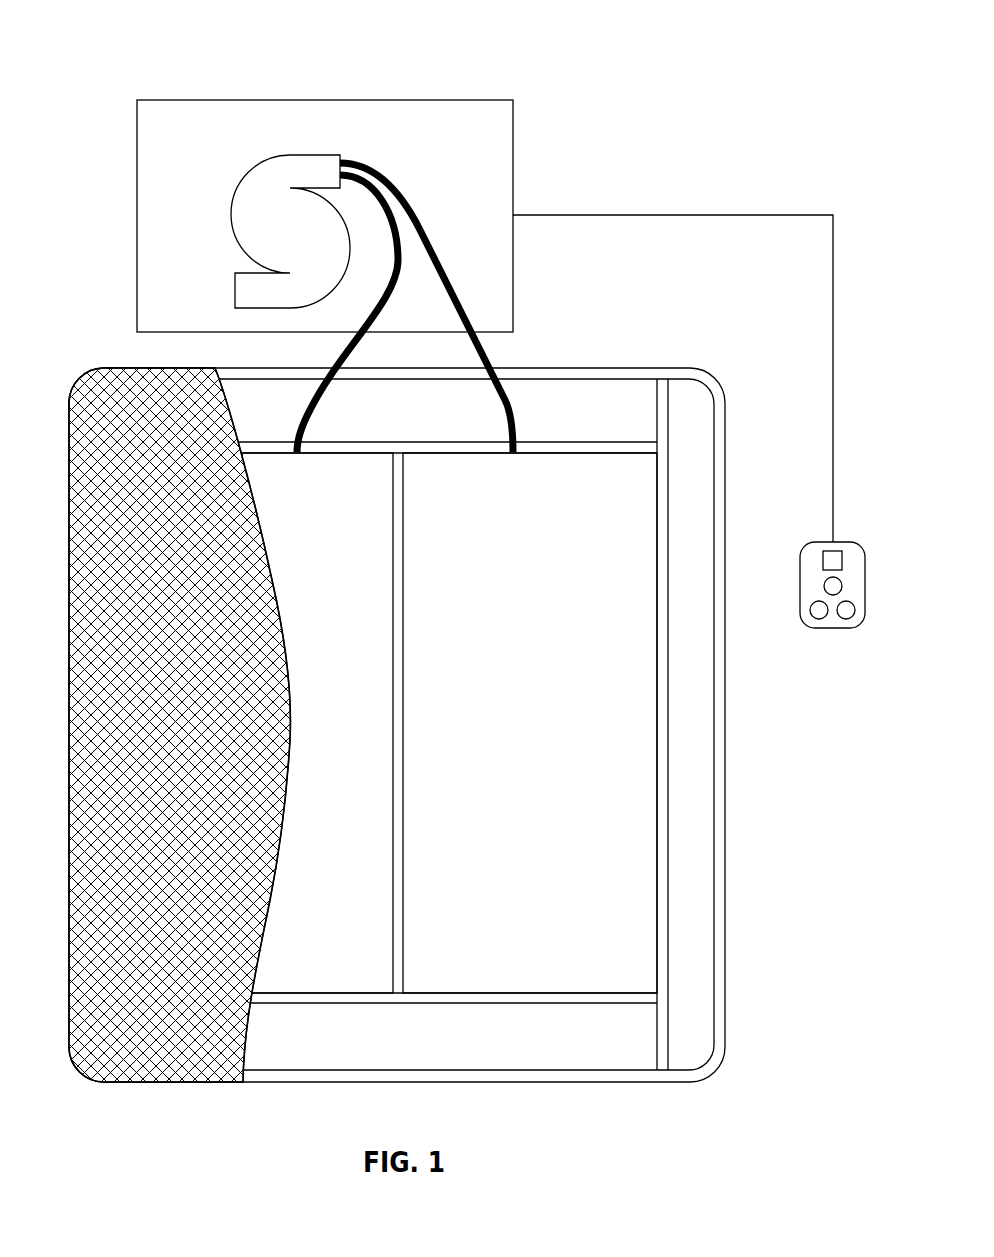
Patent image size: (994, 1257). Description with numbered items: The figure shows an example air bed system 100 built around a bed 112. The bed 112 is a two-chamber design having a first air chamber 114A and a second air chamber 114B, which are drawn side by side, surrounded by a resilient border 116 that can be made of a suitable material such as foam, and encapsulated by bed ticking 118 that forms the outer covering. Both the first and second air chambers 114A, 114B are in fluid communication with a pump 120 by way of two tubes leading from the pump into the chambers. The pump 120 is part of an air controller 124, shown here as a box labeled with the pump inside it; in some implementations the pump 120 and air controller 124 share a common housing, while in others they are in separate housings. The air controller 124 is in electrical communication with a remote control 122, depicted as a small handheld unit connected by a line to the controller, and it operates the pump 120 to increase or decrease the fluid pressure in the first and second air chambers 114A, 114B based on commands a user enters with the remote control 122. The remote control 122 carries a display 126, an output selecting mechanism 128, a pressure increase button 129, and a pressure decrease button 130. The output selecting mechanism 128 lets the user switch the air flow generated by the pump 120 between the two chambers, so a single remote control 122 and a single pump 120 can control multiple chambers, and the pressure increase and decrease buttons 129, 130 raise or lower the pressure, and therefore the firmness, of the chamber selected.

The air bed system 100 is at (134, 48).
The bed 112 is at (80, 342).
The first air chamber 114A is at (317, 723).
The second air chamber 114B is at (530, 723).
The resilient border 116 is at (695, 823).
The bed ticking 118 is at (125, 490).
The pump 120 is at (231, 204).
The remote control 122 is at (847, 542).
The air controller 124 is at (513, 100).
The display 126 is at (842, 561).
The output selecting mechanism 128 is at (842, 585).
The pressure increase button 129 is at (814, 617).
The pressure decrease button 130 is at (855, 611).